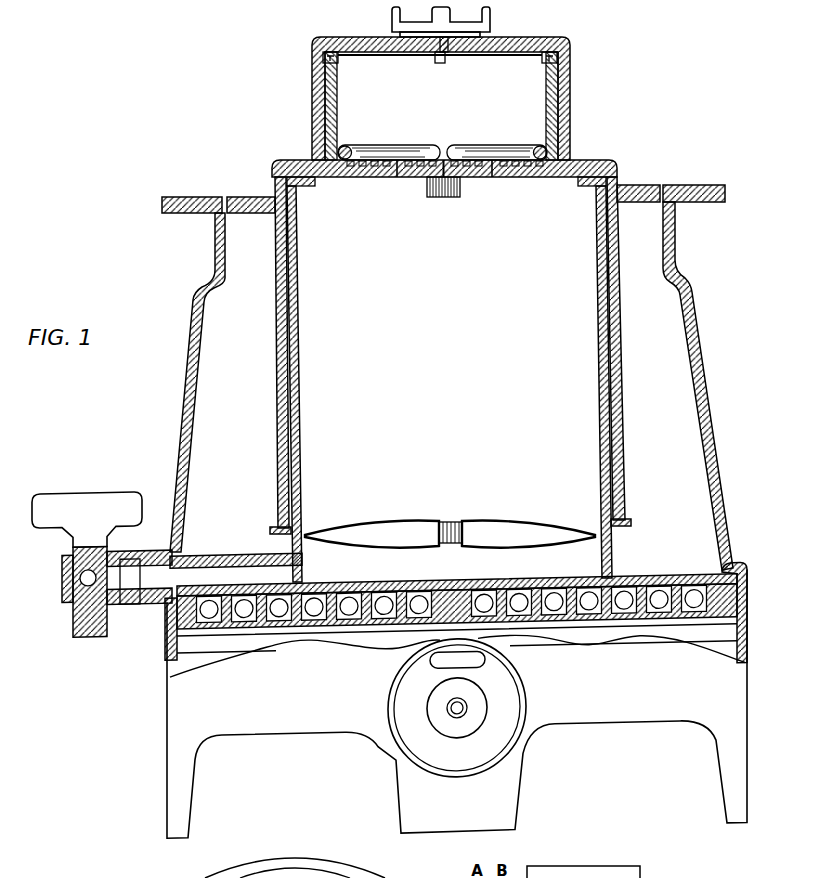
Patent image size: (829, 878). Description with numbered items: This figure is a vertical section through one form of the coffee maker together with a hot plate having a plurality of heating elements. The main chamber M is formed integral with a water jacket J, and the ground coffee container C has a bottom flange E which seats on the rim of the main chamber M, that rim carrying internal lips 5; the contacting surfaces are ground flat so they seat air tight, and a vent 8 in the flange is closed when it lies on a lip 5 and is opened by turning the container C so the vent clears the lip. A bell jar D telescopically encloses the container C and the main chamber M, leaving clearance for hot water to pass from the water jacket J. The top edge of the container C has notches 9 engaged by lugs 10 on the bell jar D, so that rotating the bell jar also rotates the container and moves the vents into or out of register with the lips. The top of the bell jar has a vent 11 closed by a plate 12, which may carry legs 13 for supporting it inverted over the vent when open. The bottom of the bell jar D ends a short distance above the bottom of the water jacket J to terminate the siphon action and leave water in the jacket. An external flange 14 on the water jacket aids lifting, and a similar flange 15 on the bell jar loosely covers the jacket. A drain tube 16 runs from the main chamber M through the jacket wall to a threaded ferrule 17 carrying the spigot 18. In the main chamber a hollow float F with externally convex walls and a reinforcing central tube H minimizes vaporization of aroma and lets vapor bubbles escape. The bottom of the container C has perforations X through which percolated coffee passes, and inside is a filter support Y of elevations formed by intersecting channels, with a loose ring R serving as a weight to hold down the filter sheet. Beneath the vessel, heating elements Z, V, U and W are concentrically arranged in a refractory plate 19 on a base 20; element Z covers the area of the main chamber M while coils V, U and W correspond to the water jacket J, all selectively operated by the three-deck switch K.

The internal lips 5 is at (443, 197).
The vent 8 is at (300, 165).
The notches 9 is at (323, 57).
The lugs 10 is at (437, 58).
The vent 11 is at (447, 45).
The plate 12 is at (491, 23).
The legs 13 is at (392, 14).
The external flange 14 is at (165, 197).
The flange 15 is at (238, 197).
The drain tube 16 is at (233, 550).
The threaded ferrule 17 is at (150, 544).
The spigot 18 is at (62, 560).
The refractory plate 19 is at (568, 625).
The base 20 is at (167, 712).
The ground coffee container C is at (546, 104).
The bell jar D is at (312, 100).
The bottom flange E is at (320, 180).
The float F is at (377, 521).
The central tube H is at (450, 522).
The water jacket J is at (194, 396).
The switch K is at (390, 684).
The main chamber M is at (596, 362).
The loose ring R is at (392, 147).
The perforations X is at (492, 177).
The filter support Y is at (447, 160).
The heating element Z is at (486, 592).
The heating coil V is at (622, 590).
The heating coil U is at (658, 590).
The heating coil W is at (693, 590).